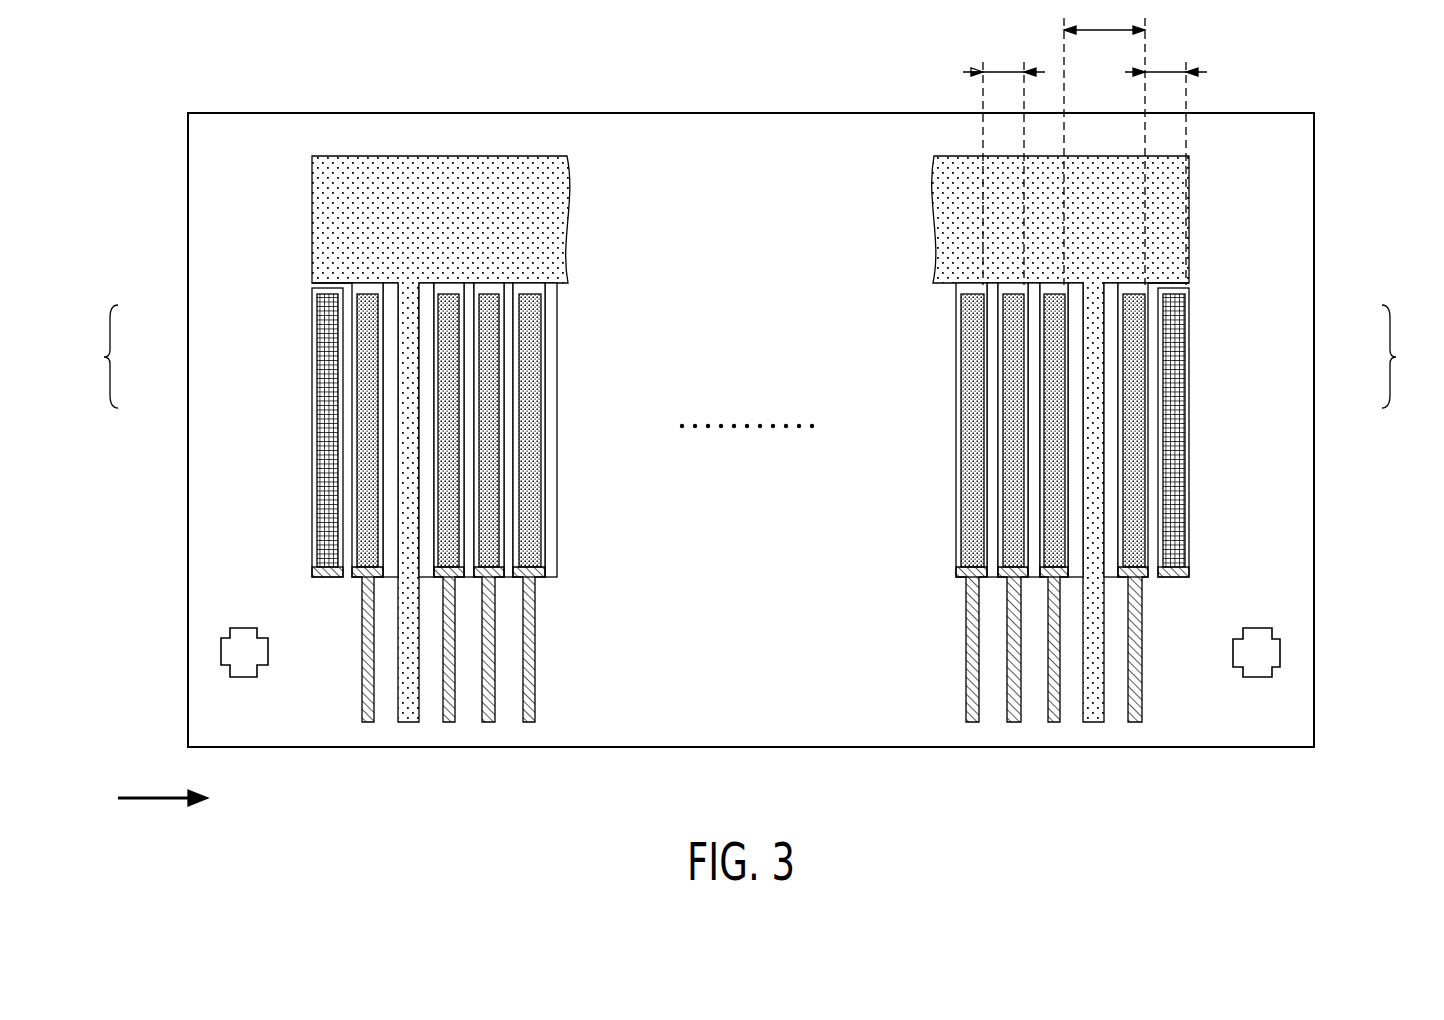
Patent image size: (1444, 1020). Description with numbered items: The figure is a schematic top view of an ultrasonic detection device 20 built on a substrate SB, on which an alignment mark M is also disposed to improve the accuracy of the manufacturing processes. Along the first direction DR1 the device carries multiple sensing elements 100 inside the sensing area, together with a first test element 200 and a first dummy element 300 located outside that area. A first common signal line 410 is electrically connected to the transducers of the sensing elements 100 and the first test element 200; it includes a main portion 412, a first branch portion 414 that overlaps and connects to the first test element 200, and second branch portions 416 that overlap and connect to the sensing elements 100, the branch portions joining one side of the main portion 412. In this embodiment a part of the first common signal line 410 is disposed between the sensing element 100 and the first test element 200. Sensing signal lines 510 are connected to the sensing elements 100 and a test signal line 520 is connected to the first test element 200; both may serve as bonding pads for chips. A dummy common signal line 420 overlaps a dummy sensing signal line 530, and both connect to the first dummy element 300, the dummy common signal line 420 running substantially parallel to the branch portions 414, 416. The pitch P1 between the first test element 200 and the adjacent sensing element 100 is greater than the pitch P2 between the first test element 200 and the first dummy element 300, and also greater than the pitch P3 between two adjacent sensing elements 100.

The ultrasonic detection device 20 is at (158, 200).
The sensing element 100 is at (455, 292).
The first test element 200 is at (367, 294).
The first dummy element 300 is at (315, 523).
The first common signal line 410 is at (752, 356).
The main portion 412 is at (328, 262).
The first branch portion 414 is at (355, 323).
The second branch portion 416 is at (435, 349).
The dummy common signal line 420 is at (312, 542).
The sensing signal line 510 is at (530, 712).
The test signal line 520 is at (372, 712).
The dummy sensing signal line 530 is at (323, 578).
The alignment mark M is at (235, 650).
The substrate SB is at (1314, 185).
The pitch between first test element and adjacent sensing element P1 is at (1104, 142).
The pitch between first test element and first dummy element P2 is at (1166, 157).
The pitch between two adjacent sensing elements P3 is at (1004, 157).
The first direction DR1 is at (165, 819).